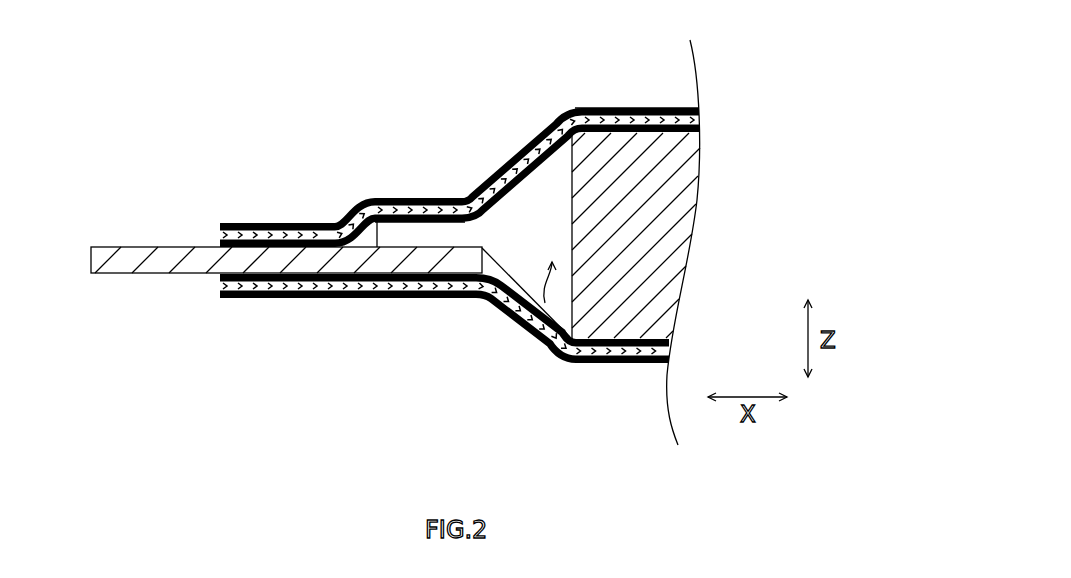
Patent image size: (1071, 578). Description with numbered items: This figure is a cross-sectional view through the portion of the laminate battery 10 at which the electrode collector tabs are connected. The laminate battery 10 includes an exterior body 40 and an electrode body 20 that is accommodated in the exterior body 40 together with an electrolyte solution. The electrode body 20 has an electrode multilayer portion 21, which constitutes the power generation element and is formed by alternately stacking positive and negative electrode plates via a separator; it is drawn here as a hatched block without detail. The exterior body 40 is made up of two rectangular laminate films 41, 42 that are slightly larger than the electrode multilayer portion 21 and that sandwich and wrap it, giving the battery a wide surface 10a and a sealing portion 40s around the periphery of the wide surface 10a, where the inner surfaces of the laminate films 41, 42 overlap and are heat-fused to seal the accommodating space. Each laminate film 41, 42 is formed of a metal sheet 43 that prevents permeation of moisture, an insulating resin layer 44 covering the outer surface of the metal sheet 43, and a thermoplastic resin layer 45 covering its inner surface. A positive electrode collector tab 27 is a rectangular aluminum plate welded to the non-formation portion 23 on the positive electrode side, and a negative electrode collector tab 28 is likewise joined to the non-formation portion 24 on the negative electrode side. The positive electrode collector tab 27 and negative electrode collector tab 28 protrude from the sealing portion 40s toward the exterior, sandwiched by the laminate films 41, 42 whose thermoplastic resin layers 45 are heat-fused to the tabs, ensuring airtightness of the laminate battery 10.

The laminate battery 10 is at (622, 62).
The wide surface 10a is at (593, 104).
The electrode body 20 is at (700, 191).
The electrode multilayer portion 21 is at (668, 239).
The non-formation portion on the positive electrode side 23 is at (523, 328).
The non-formation portion on the negative electrode side 24 is at (568, 340).
The positive electrode collector tab 27 is at (165, 262).
The negative electrode collector tab 28 is at (330, 297).
The exterior body 40 is at (472, 201).
The sealing portion 40s is at (300, 206).
The laminate film 41 is at (350, 216).
The laminate film 42 is at (333, 298).
The metal sheet 43 is at (422, 197).
The insulating resin layer 44 is at (463, 202).
The thermoplastic resin layer 45 is at (383, 198).